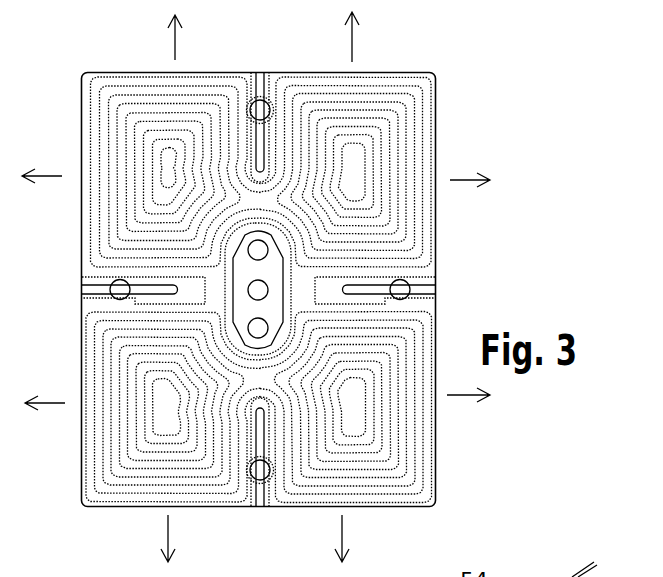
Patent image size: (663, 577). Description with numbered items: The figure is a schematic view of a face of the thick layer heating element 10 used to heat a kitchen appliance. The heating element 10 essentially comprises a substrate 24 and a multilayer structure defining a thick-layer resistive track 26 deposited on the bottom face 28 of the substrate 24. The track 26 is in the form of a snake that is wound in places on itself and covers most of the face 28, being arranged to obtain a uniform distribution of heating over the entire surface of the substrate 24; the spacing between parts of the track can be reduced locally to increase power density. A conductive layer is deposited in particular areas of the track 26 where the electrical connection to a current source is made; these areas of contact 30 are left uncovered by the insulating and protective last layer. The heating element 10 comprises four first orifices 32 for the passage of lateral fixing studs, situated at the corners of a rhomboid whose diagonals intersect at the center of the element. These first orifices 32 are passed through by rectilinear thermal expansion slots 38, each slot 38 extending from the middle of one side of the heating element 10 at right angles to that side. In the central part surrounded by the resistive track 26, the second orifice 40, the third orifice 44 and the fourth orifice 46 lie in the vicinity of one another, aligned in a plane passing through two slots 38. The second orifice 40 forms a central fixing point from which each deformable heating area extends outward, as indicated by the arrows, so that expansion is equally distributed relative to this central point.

The thick layer heating element 10 is at (517, 111).
The substrate 24 is at (438, 78).
The bottom face 28 is at (259, 290).
The resistive track 26 is at (403, 140).
The areas of contact 30 is at (268, 290).
The first orifices 32 is at (268, 100).
The thermal expansion slots 38 is at (253, 90).
The second orifice 40 is at (270, 296).
The third orifice 44 is at (270, 336).
The fourth orifice 46 is at (262, 243).